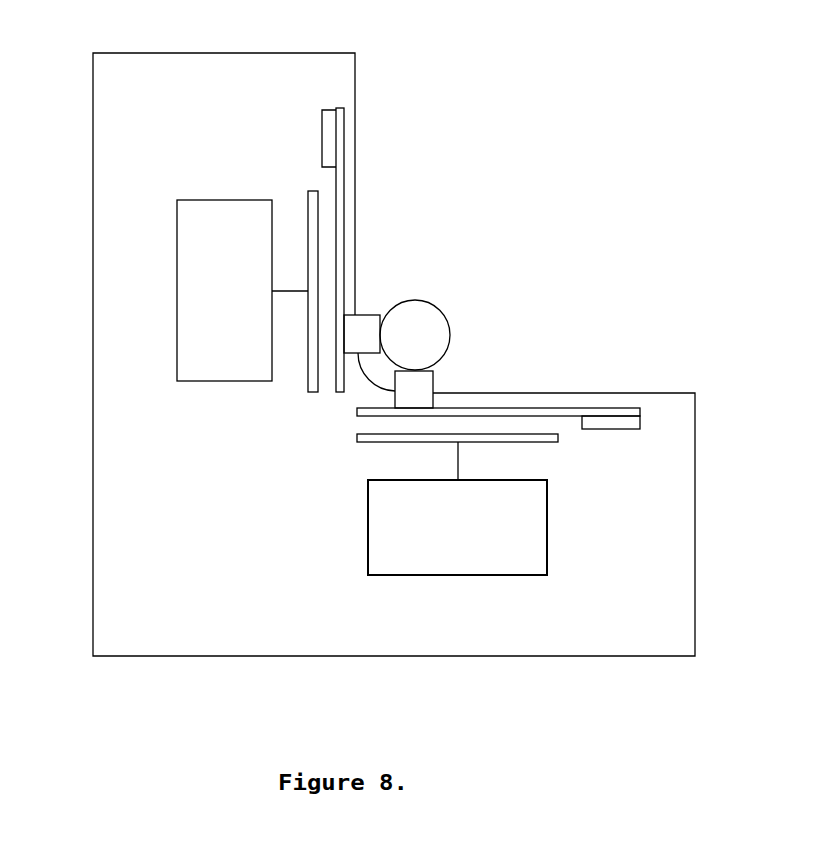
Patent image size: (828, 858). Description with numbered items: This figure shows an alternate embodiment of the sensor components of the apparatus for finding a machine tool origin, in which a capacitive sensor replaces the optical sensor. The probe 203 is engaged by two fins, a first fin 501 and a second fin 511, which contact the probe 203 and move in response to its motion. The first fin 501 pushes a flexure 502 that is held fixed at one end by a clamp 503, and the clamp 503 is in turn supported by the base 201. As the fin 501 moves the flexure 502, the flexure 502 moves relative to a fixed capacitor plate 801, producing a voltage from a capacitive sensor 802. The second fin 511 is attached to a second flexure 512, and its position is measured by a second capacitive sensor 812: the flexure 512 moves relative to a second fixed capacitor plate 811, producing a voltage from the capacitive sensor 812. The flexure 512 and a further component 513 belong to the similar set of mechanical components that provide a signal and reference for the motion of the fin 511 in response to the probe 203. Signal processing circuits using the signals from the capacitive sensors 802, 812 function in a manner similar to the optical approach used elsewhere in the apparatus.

The base 201 is at (198, 592).
The second capacitive sensor 812 is at (231, 238).
The fixed capacitor plate 811 is at (312, 215).
The mechanical and optical component 513 is at (329, 122).
The flexure 512 is at (337, 183).
The fin 511 is at (368, 332).
The probe 203 is at (425, 333).
The fin 501 is at (420, 382).
The flexure 502 is at (575, 411).
The clamp 503 is at (620, 424).
The fixed capacitor plate 801 is at (523, 438).
The capacitive sensor 802 is at (508, 520).